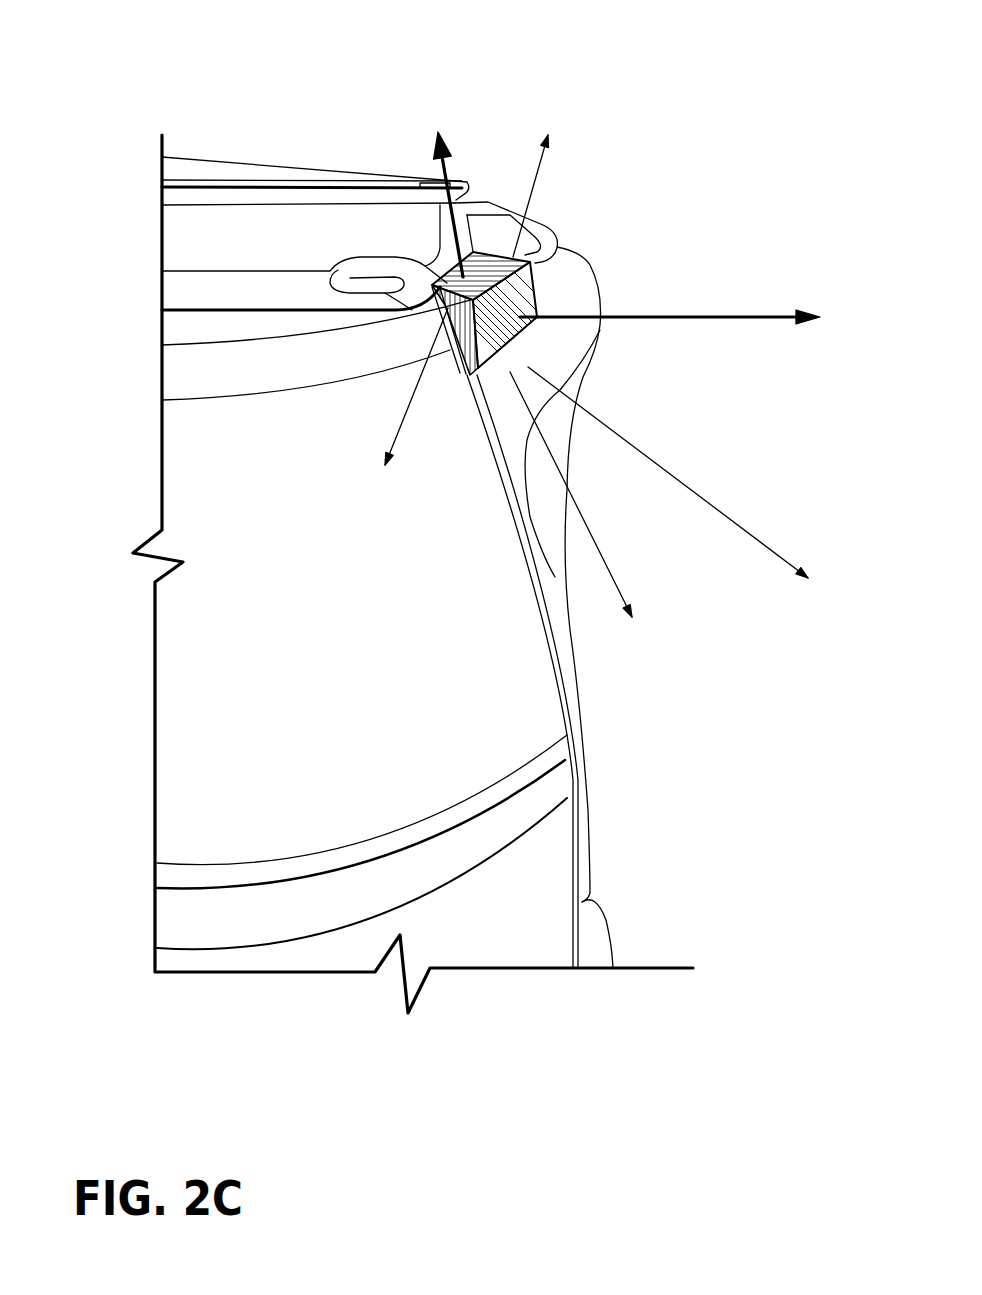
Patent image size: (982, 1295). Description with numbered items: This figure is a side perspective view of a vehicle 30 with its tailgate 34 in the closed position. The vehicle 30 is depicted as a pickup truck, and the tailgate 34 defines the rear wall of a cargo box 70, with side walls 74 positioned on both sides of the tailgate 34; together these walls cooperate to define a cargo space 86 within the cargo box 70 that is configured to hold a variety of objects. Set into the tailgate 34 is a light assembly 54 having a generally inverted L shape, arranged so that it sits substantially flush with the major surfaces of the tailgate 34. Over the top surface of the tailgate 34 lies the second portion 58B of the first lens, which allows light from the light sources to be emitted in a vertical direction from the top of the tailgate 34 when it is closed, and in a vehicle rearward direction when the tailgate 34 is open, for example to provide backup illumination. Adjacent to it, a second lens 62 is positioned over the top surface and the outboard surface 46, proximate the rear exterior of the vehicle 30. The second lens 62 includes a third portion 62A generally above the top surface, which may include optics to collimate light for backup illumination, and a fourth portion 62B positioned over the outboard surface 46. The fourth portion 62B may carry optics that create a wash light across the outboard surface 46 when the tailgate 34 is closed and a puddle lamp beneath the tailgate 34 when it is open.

The vehicle 30 is at (193, 112).
The tailgate 34 is at (538, 208).
The outboard surface 46 is at (555, 345).
The light assembly 54 is at (515, 257).
The second portion 58B is at (433, 280).
The second lens 62 is at (530, 300).
The third portion 62A is at (528, 290).
The fourth portion 62B is at (537, 312).
The cargo box 70 is at (205, 293).
The side walls 74 is at (257, 561).
The cargo space 86 is at (240, 227).